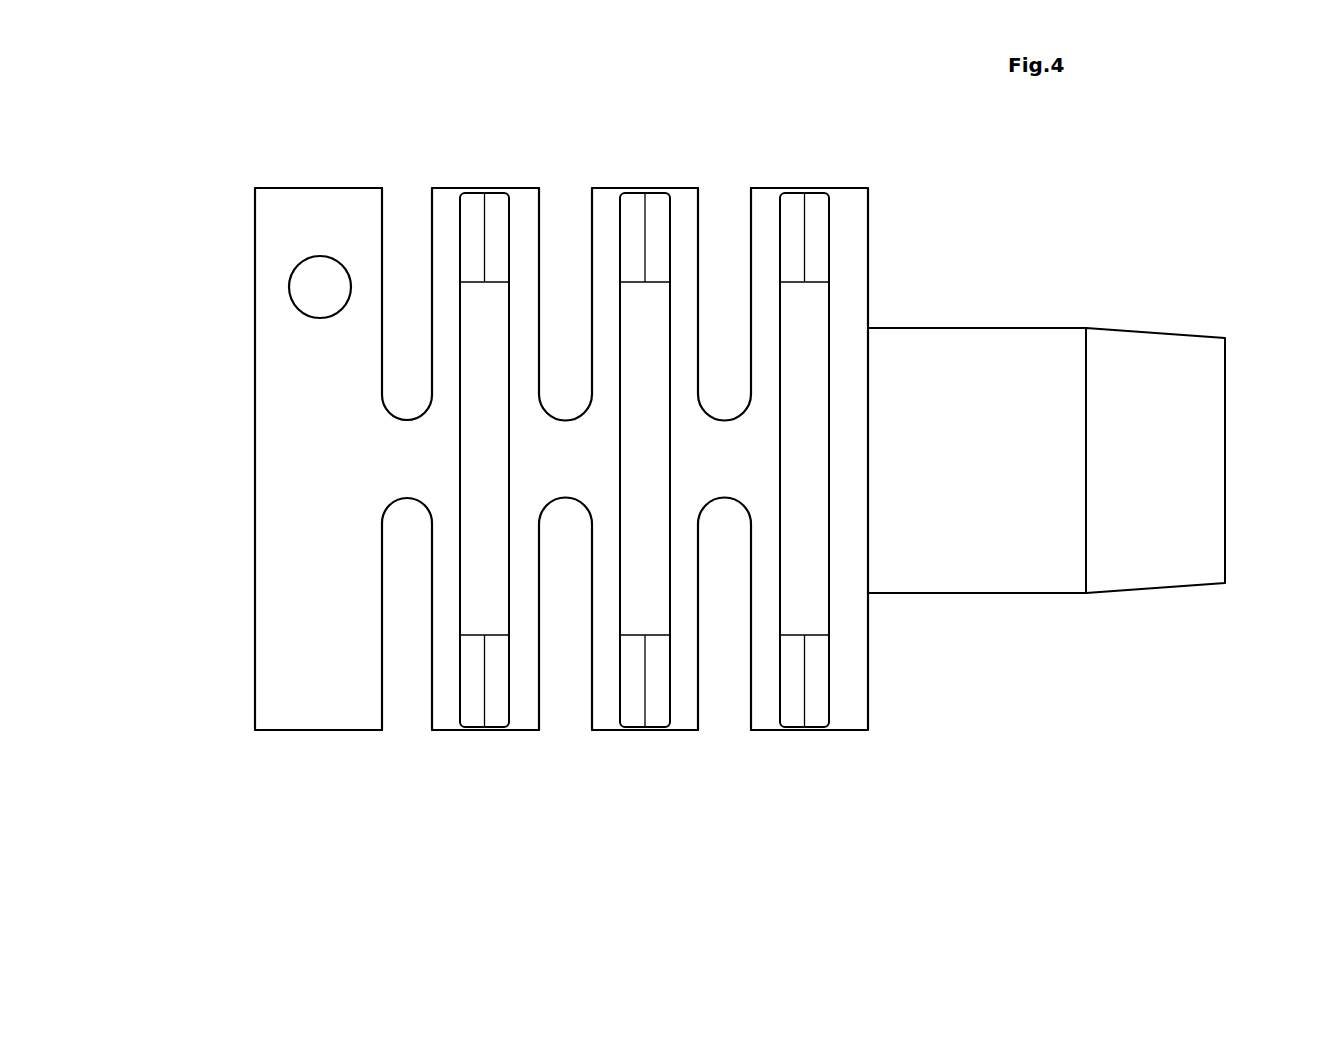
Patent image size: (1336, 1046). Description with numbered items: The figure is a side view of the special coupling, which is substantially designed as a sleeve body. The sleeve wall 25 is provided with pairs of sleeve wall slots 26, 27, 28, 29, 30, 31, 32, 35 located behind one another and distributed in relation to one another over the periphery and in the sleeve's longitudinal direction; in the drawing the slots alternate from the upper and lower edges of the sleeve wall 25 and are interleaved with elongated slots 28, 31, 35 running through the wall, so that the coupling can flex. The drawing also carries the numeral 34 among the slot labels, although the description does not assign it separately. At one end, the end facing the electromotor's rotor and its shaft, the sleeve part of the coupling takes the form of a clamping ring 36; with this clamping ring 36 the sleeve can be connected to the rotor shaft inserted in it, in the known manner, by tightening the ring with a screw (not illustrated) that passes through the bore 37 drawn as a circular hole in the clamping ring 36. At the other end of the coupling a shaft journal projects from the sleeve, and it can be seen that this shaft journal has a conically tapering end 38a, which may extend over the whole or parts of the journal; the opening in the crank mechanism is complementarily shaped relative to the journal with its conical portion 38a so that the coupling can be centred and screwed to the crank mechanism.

The sleeve wall 25 is at (408, 460).
The sleeve wall slot 26 is at (403, 240).
The sleeve wall slot 27 is at (412, 688).
The sleeve wall slot 28 is at (478, 305).
The sleeve wall slot 29 is at (563, 225).
The sleeve wall slot 30 is at (570, 685).
The sleeve wall slot 31 is at (632, 295).
The sleeve wall slot 32 is at (728, 262).
The lower slot 34 is at (735, 683).
The sleeve wall slot 35 is at (802, 602).
The clamping ring 36 is at (333, 418).
The bore 37 is at (315, 280).
The conically tapering end 38a is at (1177, 350).